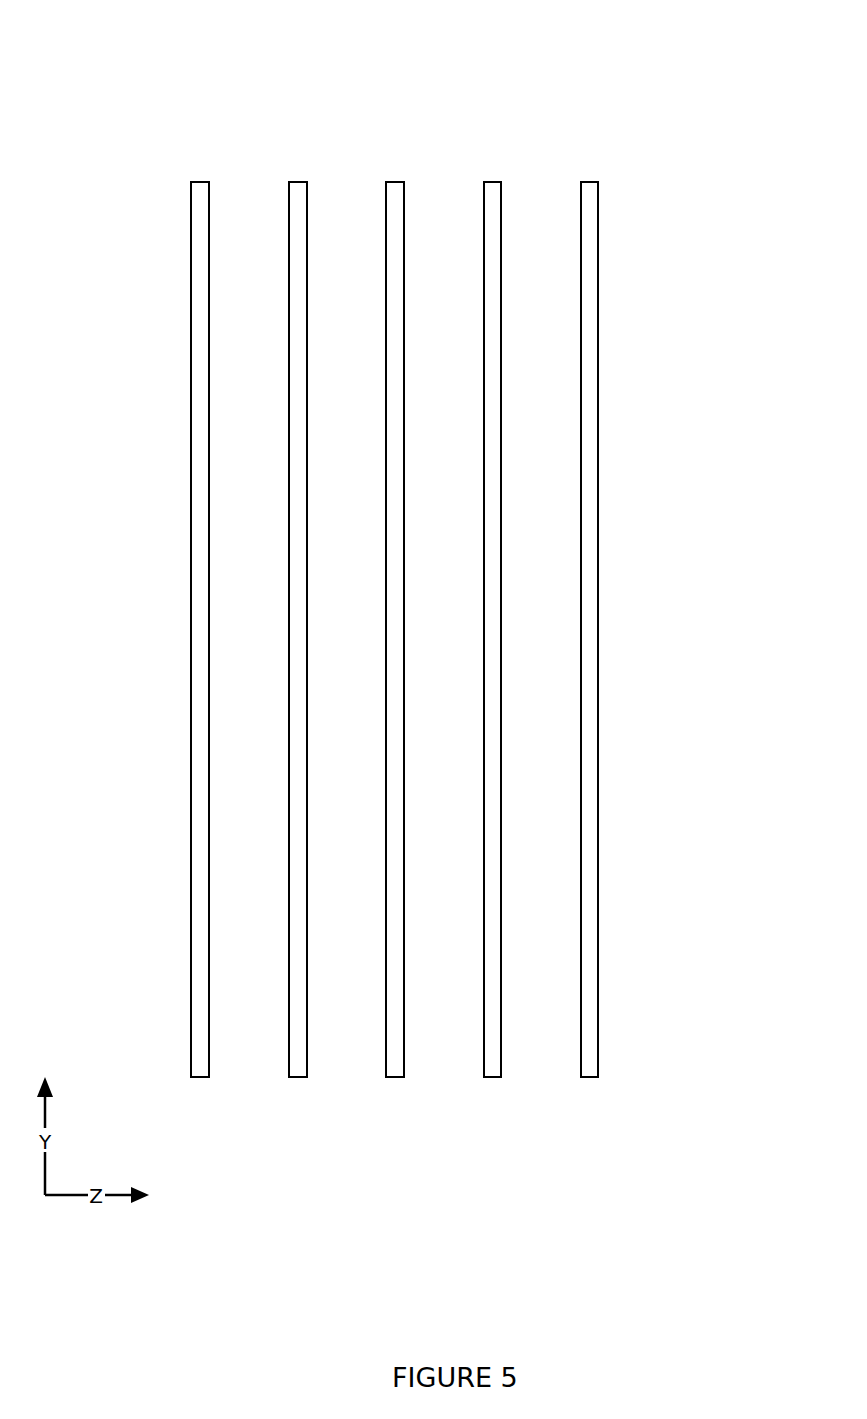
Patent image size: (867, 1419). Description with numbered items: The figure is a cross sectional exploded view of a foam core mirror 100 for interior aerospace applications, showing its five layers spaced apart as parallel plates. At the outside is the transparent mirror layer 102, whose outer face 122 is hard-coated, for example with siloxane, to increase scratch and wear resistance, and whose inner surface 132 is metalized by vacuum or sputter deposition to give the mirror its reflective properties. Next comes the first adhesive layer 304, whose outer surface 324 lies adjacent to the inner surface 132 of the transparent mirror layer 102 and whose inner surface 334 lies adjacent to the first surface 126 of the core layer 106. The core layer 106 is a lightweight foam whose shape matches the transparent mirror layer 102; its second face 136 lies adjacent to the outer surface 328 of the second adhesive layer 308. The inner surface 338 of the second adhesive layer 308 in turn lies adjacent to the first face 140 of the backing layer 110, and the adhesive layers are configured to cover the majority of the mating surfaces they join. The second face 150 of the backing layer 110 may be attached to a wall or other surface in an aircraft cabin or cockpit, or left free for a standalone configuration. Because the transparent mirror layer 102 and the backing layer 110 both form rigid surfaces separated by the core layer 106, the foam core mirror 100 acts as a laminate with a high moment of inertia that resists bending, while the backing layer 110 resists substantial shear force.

The foam core mirror 100 is at (708, 87).
The transparent mirror layer 102 is at (205, 1060).
The first adhesive layer 304 is at (297, 1040).
The core layer 106 is at (398, 1038).
The second adhesive layer 308 is at (497, 1032).
The backing layer 110 is at (587, 1052).
The outer face 122 is at (190, 255).
The inner surface 132 is at (210, 200).
The outer surface 324 is at (288, 317).
The inner surface 334 is at (307, 247).
The first surface 126 is at (385, 253).
The second face 136 is at (405, 220).
The outer surface 328 is at (483, 243).
The inner surface 338 is at (502, 228).
The first face 140 is at (580, 327).
The second face 150 is at (598, 273).